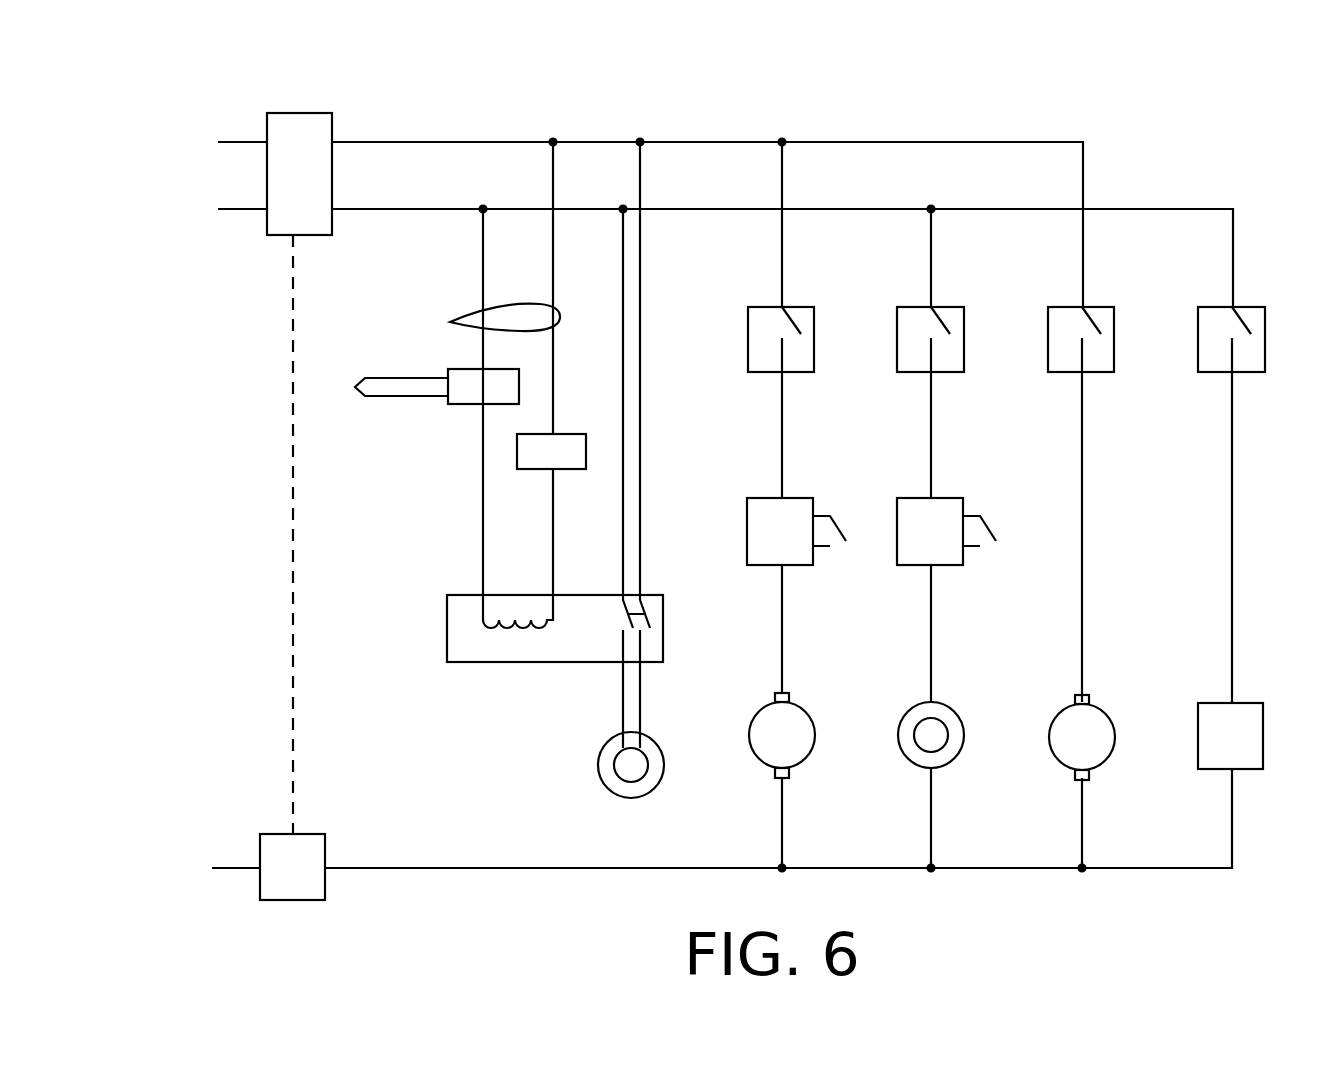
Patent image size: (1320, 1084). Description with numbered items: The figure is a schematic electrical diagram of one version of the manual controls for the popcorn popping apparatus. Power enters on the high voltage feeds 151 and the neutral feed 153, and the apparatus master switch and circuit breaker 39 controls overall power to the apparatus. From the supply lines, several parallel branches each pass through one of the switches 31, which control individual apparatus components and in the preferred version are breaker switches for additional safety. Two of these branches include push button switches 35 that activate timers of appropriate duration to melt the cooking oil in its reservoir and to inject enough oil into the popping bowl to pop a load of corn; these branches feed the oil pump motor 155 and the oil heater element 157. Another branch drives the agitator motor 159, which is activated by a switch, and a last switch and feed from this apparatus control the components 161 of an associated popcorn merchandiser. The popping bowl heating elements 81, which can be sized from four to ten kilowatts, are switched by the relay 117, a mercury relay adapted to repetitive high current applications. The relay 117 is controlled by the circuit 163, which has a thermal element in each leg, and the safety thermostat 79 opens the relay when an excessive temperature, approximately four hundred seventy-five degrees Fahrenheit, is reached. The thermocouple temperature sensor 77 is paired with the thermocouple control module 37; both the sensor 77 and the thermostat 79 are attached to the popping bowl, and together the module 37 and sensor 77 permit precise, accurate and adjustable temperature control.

The switches 31 is at (799, 307).
The push button switches 35 is at (795, 498).
The thermocouple control module 37 is at (460, 369).
The apparatus master switch and circuit breaker 39 is at (312, 113).
The thermocouple temperature sensor 77 is at (362, 378).
The safety thermostat 79 is at (540, 469).
The popping bowl heating elements 81 is at (598, 757).
The relay 117 is at (447, 610).
The high voltage feeds 151 is at (233, 141).
The neutral feed 153 is at (222, 867).
The oil pump motor 155 is at (805, 756).
The oil heater element 157 is at (955, 756).
The agitator motor 159 is at (1105, 756).
The components of an associated popcorn merchandiser 161 is at (1245, 769).
The circuit 163 is at (450, 318).